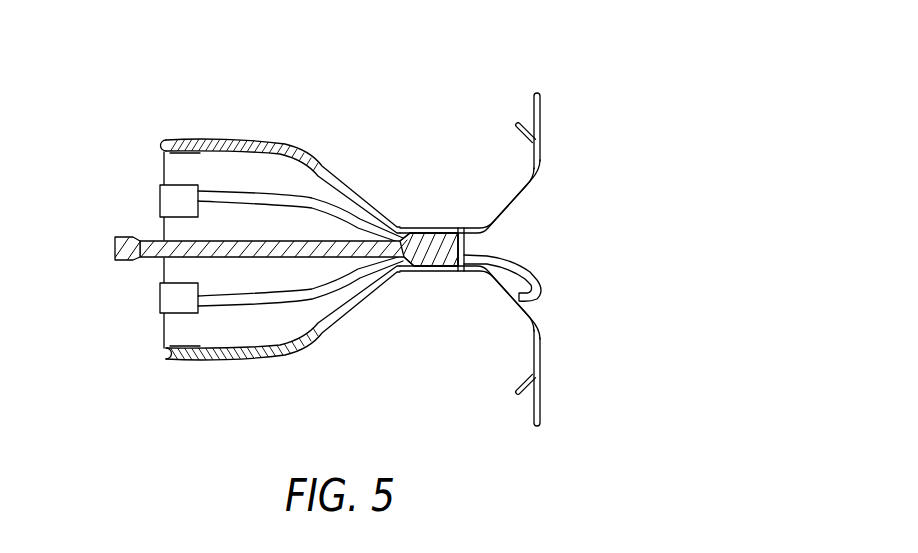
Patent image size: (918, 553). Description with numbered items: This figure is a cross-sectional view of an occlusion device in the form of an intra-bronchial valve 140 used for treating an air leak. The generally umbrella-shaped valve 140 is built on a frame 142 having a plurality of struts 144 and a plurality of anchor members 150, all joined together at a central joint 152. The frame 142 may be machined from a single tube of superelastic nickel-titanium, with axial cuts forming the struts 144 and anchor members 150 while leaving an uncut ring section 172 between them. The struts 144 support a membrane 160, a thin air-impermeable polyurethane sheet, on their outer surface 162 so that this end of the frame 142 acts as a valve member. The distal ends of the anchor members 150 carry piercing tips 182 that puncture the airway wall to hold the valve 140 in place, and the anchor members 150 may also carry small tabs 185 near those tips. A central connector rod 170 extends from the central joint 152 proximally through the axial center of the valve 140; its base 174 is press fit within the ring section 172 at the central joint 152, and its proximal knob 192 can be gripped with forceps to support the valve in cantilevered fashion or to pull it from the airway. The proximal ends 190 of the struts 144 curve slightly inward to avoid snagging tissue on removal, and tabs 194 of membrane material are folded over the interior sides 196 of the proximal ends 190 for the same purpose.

The intra-bronchial valve 140 is at (117, 95).
The frame 142 is at (274, 246).
The struts 144 is at (250, 189).
The anchor members 150 is at (520, 255).
The central joint 152 is at (428, 230).
The membrane 160 is at (194, 330).
The outer surface 162 is at (281, 147).
The connector rod 170 is at (250, 233).
The ring section 172 is at (459, 228).
The base 174 is at (432, 256).
The piercing tips 182 is at (550, 105).
The tab 185 is at (520, 121).
The proximal ends 190 is at (172, 139).
The proximal knob 192 is at (157, 241).
The tabs 194 is at (172, 200).
The interior sides 196 is at (222, 150).